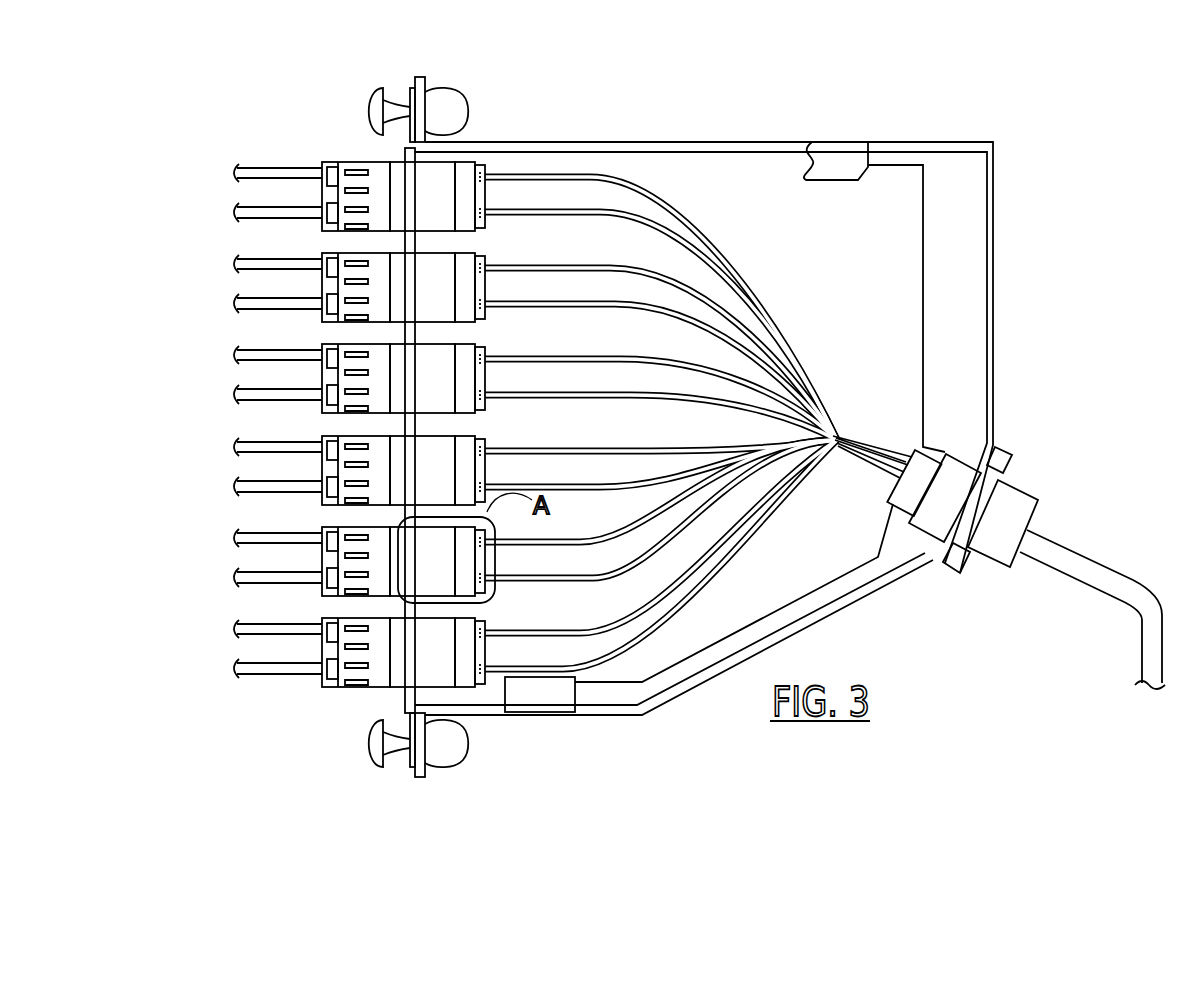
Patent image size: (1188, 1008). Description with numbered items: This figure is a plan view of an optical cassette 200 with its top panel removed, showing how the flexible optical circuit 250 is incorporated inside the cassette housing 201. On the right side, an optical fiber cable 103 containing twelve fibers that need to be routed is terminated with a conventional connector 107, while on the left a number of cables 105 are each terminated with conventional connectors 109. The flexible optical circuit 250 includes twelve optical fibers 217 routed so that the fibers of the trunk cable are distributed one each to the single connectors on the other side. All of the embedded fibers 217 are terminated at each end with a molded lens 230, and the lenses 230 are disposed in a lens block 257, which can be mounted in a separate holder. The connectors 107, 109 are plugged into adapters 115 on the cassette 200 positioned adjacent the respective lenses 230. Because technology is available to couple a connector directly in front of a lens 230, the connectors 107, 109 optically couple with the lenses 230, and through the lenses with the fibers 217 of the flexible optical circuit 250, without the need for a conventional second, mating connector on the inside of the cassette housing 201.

The optical cassette 200 is at (988, 93).
The cassette housing 201 is at (993, 180).
The flexible optical circuit 250 is at (898, 317).
The lens block 257 is at (487, 222).
The optical fibers 217 is at (713, 320).
The adapters 115 is at (449, 195).
The connectors 109 is at (355, 231).
The cables 105 is at (257, 213).
The molded lens 230 is at (528, 618).
The connector 107 is at (1005, 480).
The cable 103 is at (1072, 547).